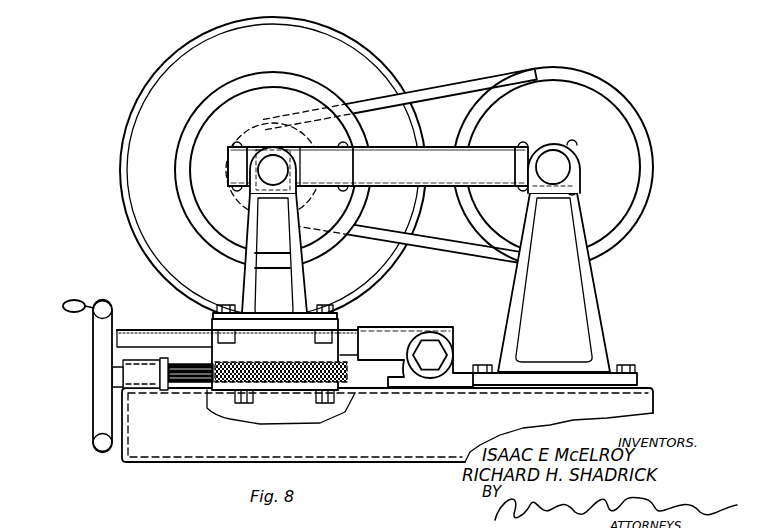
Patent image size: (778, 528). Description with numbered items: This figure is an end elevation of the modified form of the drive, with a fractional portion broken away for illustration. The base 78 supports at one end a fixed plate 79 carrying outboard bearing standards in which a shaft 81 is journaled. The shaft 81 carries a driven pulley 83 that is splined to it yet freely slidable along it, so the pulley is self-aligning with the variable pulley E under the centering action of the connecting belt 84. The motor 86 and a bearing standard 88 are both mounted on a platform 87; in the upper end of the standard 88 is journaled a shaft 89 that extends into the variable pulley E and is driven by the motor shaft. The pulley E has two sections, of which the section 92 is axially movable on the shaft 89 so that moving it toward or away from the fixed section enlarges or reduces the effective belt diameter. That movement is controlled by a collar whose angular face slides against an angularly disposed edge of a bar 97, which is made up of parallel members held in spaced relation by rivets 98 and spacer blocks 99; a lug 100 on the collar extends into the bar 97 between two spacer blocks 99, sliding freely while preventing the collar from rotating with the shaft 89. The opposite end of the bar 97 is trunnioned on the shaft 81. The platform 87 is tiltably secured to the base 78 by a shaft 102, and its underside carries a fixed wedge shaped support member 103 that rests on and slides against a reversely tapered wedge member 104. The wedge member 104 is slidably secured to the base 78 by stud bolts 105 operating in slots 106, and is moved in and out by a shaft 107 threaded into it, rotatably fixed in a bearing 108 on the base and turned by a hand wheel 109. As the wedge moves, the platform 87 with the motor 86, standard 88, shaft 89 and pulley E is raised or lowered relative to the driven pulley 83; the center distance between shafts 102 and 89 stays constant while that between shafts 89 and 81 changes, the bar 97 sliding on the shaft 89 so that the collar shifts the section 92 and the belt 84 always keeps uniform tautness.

The base 78 is at (637, 405).
The fixed plate 79 is at (630, 380).
The shaft 81 is at (556, 168).
The driven pulley 83 is at (618, 177).
The connecting belt 84 is at (452, 90).
The motor 86 is at (371, 48).
The platform 87 is at (373, 337).
The bearing standard 88 is at (300, 286).
The shaft 89 is at (266, 174).
The pulley section 92 is at (284, 100).
The bar 97 is at (443, 170).
The rivets 98 is at (238, 146).
The spacer blocks 99 is at (240, 166).
The lug 100 is at (314, 174).
The shaft 102 is at (432, 360).
The wedge shaped support member 103 is at (220, 354).
The wedge member 104 is at (328, 355).
The stud bolts 105 is at (240, 402).
The slots 106 is at (228, 393).
The shaft 107 is at (192, 382).
The bearing 108 is at (143, 375).
The hand wheel 109 is at (103, 388).
The variable pulley E is at (368, 137).